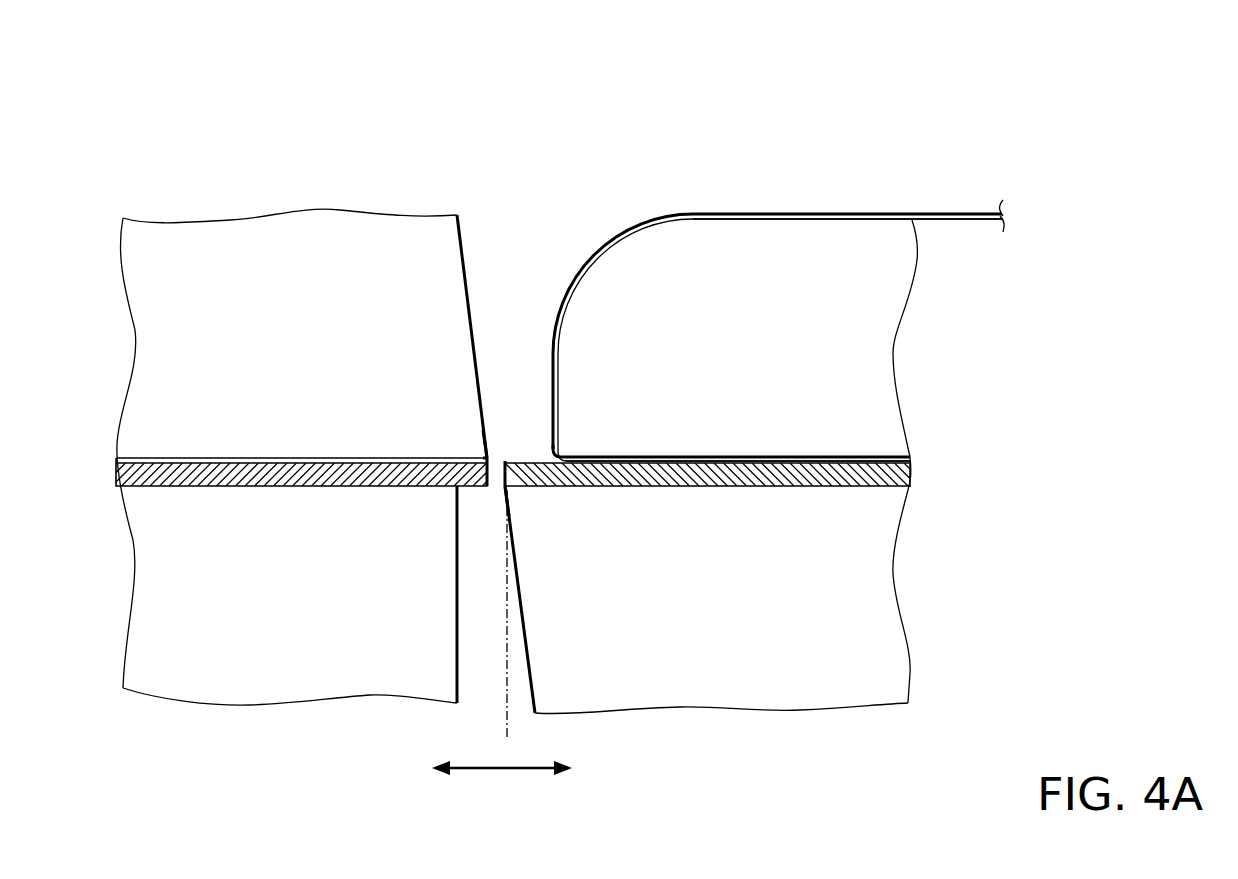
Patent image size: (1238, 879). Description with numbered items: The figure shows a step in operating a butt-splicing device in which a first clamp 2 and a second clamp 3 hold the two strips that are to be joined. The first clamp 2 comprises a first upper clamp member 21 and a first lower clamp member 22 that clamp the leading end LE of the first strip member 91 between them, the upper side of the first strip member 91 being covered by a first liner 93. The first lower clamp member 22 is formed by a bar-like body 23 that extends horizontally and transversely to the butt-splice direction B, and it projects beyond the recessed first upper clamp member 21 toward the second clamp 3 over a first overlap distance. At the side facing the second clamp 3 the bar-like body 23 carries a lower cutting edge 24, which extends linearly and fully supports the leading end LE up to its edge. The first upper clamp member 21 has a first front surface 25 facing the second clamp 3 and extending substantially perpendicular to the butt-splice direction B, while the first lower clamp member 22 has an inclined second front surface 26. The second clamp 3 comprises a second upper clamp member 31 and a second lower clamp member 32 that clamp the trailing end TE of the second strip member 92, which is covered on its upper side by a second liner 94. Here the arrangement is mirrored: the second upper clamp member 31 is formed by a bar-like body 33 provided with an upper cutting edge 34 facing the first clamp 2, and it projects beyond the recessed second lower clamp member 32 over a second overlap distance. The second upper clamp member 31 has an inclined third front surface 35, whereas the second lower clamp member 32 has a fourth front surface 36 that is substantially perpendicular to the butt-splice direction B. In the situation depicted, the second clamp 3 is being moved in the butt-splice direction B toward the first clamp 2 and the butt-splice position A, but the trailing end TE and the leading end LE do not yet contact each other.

The first clamp 2 is at (928, 150).
The second clamp 3 is at (95, 152).
The first upper clamp member 21 is at (760, 243).
The first lower clamp member 22 is at (746, 678).
The bar-like body 23 is at (804, 627).
The lower cutting edge 24 is at (510, 490).
The first front surface 25 is at (553, 371).
The second front surface 26 is at (532, 672).
The second upper clamp member 31 is at (193, 256).
The second lower clamp member 32 is at (256, 680).
The bar-like body 33 is at (284, 303).
The upper cutting edge 34 is at (480, 456).
The third front surface 35 is at (455, 253).
The fourth front surface 36 is at (457, 682).
The first strip member 91 is at (772, 487).
The second strip member 92 is at (252, 470).
The first liner 93 is at (972, 212).
The second liner 94 is at (212, 456).
The trailing end TE is at (480, 472).
The leading end LE is at (563, 448).
The butt-splice position A is at (497, 620).
The butt-splice direction B is at (498, 788).